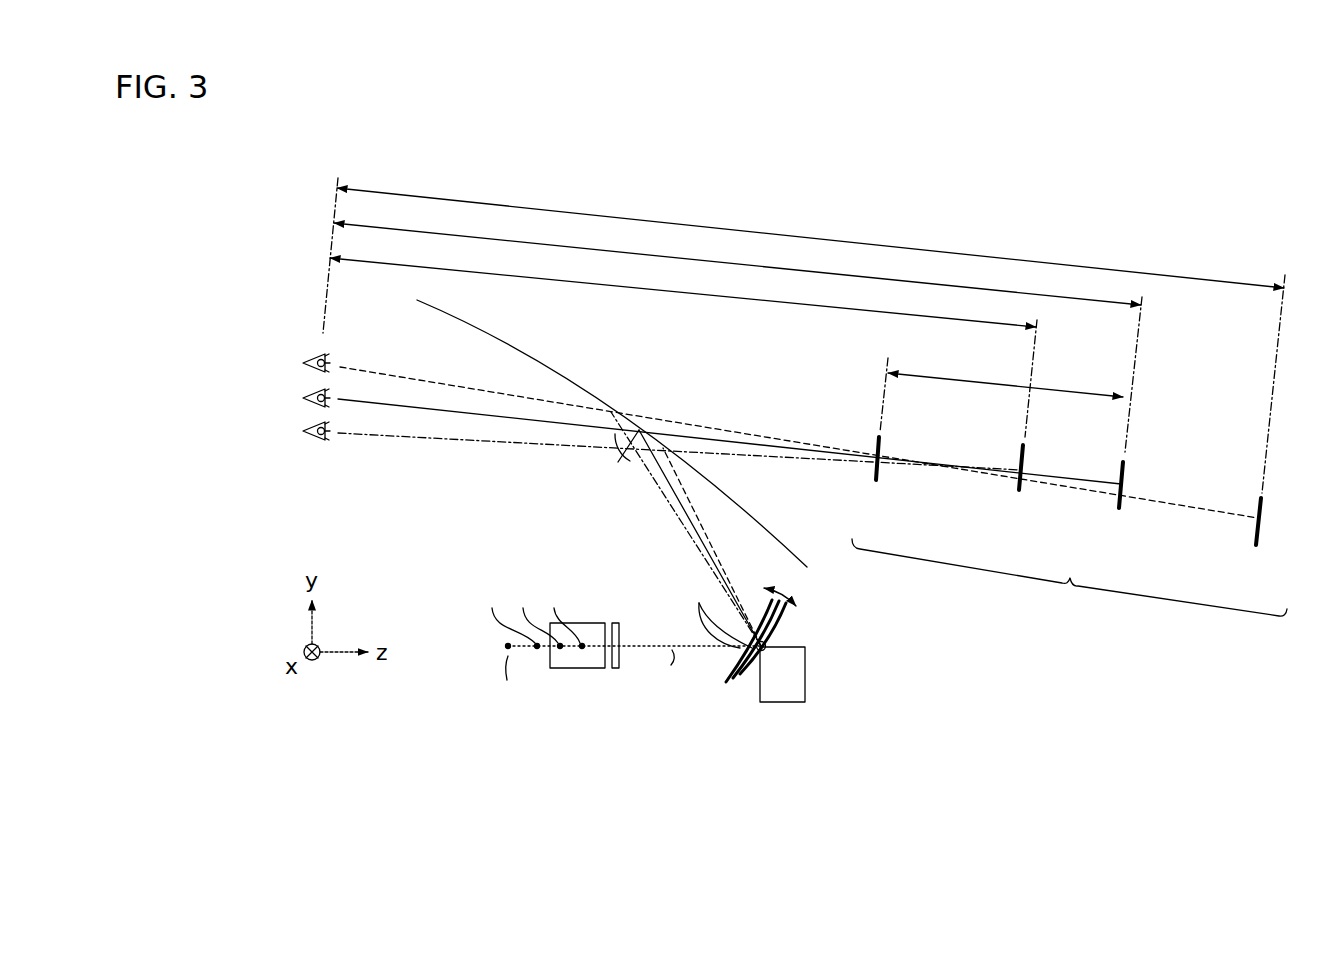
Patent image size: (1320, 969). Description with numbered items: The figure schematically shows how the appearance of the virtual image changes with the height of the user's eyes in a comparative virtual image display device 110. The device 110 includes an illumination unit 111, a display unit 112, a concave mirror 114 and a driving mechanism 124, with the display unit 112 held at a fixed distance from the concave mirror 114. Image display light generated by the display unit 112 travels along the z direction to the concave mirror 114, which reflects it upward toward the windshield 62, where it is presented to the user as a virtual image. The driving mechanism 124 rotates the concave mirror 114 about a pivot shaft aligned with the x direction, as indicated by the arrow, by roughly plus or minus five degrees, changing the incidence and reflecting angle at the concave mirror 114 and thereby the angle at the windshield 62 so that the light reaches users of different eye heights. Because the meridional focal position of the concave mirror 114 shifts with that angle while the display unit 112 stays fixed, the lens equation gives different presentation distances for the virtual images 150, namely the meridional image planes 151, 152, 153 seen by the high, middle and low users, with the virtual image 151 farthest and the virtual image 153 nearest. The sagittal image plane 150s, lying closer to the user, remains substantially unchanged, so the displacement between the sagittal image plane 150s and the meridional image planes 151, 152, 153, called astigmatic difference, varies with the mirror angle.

The windshield 62 is at (503, 343).
The virtual image display device 110 is at (460, 598).
The illumination unit 111 is at (583, 622).
The display unit 112 is at (618, 622).
The concave mirror 114 is at (782, 621).
The driving mechanism 124 is at (783, 705).
The virtual images 150 is at (1069, 583).
The sagittal image plane 150s is at (877, 494).
The virtual image 151 is at (1254, 557).
The virtual image 152 is at (1118, 519).
The virtual image 153 is at (1019, 503).